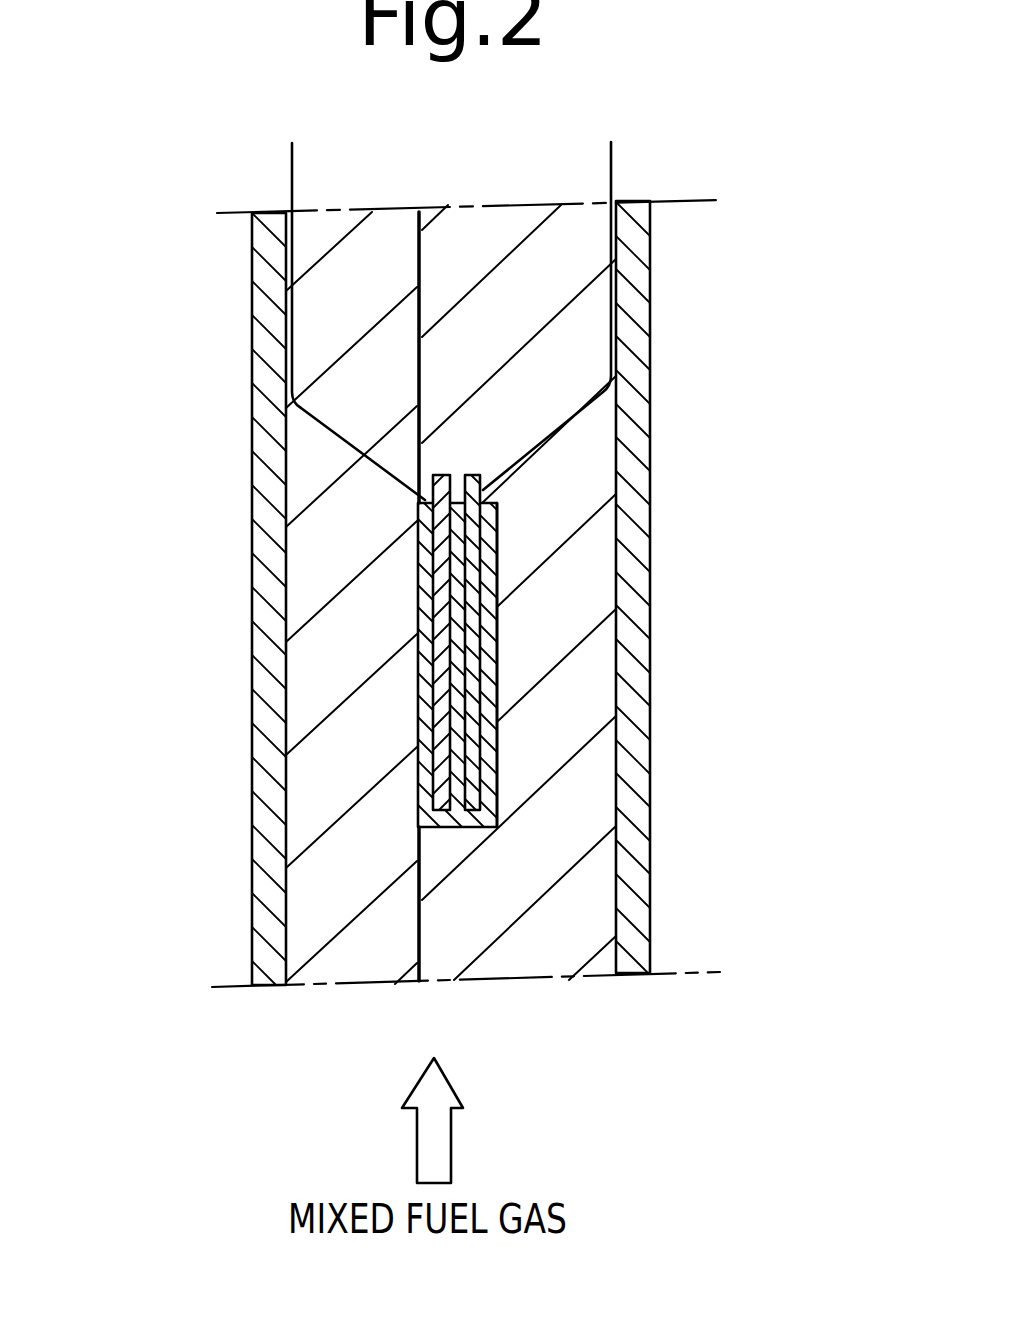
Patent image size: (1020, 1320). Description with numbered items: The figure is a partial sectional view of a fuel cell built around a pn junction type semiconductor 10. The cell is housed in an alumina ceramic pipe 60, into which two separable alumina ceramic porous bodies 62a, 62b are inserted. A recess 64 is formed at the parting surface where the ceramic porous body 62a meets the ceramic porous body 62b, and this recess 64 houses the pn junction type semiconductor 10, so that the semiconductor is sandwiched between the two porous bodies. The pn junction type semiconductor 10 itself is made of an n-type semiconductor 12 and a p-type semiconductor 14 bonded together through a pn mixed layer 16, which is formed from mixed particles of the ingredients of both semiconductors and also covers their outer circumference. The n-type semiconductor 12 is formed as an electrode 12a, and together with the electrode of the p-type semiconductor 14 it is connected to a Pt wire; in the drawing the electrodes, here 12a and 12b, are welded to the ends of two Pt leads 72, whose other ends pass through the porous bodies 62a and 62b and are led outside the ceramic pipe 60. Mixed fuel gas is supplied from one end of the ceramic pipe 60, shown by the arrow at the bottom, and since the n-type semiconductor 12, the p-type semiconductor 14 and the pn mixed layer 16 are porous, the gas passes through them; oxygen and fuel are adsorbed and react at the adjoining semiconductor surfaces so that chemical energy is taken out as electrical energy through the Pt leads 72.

The pn junction type semiconductor 10 is at (451, 627).
The n-type semiconductor 12 is at (451, 627).
The electrode 12a is at (436, 497).
The cathode 12b is at (483, 491).
The p-type semiconductor 14 is at (497, 794).
The pn mixed layer 16 is at (455, 618).
The alumina ceramic pipe 60 is at (650, 543).
The ceramic porous body 62a is at (330, 965).
The ceramic porous body 62b is at (547, 965).
The recess 64 is at (497, 687).
The Pt lead 72 is at (292, 162).